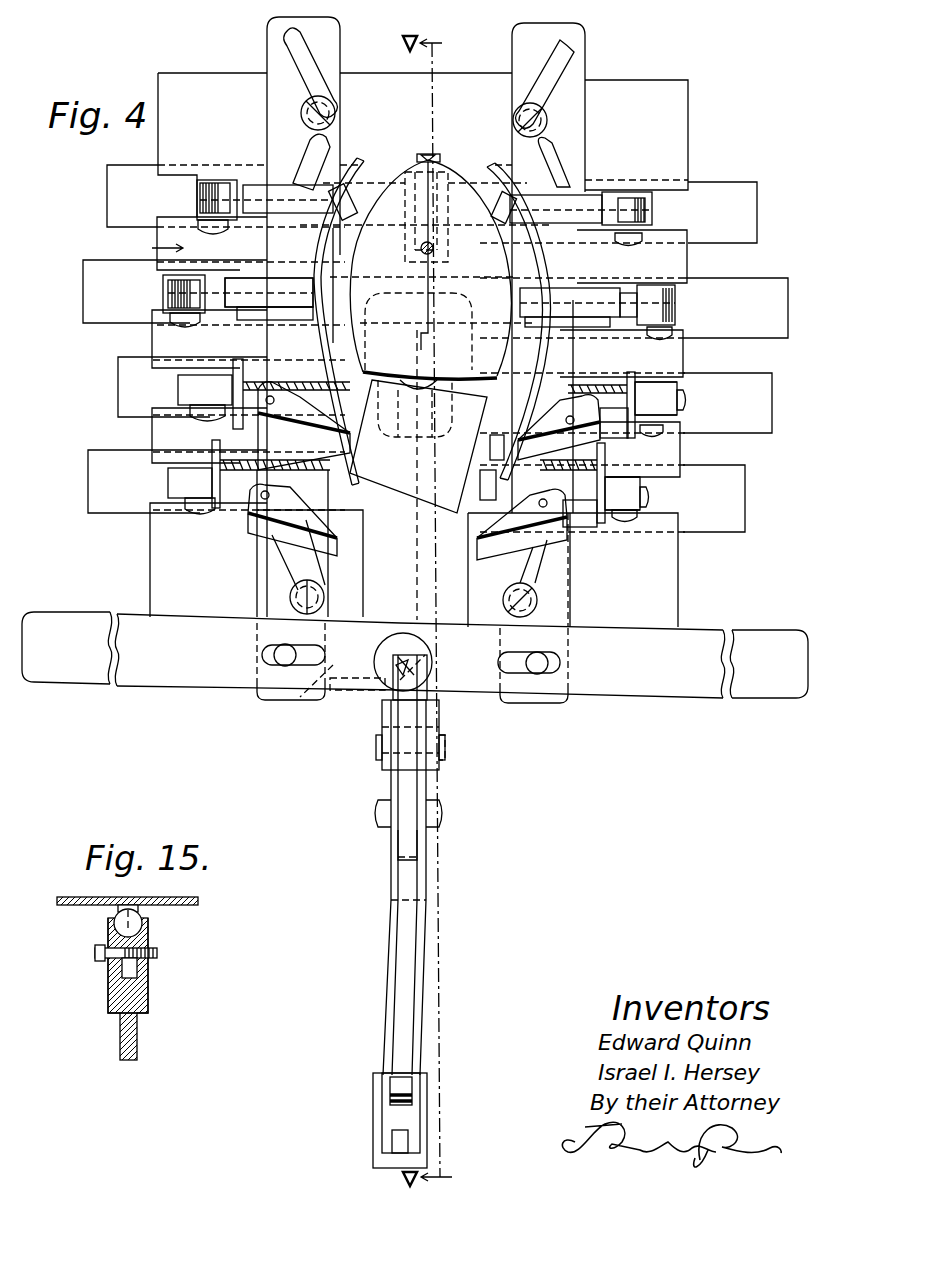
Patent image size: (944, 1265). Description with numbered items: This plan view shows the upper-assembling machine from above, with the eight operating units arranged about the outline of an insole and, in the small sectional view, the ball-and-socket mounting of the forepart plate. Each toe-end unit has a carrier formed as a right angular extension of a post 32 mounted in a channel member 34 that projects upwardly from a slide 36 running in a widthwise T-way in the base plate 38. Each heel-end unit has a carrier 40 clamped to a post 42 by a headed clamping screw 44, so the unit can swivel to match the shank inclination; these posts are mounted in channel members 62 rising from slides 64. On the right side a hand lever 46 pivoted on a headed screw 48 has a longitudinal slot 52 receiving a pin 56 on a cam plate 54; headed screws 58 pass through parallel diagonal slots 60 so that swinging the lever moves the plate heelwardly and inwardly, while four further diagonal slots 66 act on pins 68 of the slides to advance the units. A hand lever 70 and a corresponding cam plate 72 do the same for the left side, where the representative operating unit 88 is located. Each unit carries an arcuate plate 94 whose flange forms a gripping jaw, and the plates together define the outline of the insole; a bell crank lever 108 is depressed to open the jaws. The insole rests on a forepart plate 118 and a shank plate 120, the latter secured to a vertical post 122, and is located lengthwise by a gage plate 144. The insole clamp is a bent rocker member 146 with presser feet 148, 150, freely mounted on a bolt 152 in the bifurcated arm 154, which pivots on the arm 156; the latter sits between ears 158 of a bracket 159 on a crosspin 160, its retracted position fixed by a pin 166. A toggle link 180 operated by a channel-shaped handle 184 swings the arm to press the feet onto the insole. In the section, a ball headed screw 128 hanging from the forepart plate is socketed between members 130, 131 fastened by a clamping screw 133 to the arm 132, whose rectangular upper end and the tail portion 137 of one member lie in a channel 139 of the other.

In FIG. 4, the post 32 is at (630, 197).
In FIG. 4, the channel member 34 is at (657, 212).
In FIG. 4, the slide 36 is at (736, 260).
In FIG. 4, the base plate 38 is at (690, 155).
In FIG. 4, the carrier 40 is at (613, 410).
In FIG. 4, the post 42 is at (648, 397).
In FIG. 4, the headed clamping screw 44 is at (685, 393).
In FIG. 4, the hand lever 46 is at (628, 688).
In FIG. 4, the headed screw 48 is at (400, 643).
In FIG. 4, the longitudinal slot 52 is at (538, 698).
In FIG. 4, the cam plate 54 is at (562, 603).
In FIG. 4, the pin 56 is at (543, 663).
In FIG. 4, the headed screw 58 is at (502, 607).
In FIG. 4, the diagonal slots 60 is at (572, 67).
In FIG. 4, the channel member 62 is at (678, 387).
In FIG. 4, the slide 64 is at (727, 452).
In FIG. 4, the diagonal slots 66 is at (547, 147).
In FIG. 4, the pins 68 is at (560, 173).
In FIG. 4, the hand lever 70 is at (173, 672).
In FIG. 4, the cam plate 72 is at (263, 577).
In FIG. 4, the operating unit 88 is at (154, 249).
In FIG. 4, the arcuate plate 94 is at (333, 270).
In FIG. 4, the bell crank lever 108 is at (233, 290).
In FIG. 4, the forepart plate 118 is at (425, 390).
In FIG. 15, the forepart plate 118 is at (190, 897).
In FIG. 4, the shank plate 120 is at (395, 478).
In FIG. 4, the post 122 is at (388, 387).
In FIG. 4, the gage plate 144 is at (432, 153).
In FIG. 4, the rocker member 146 is at (407, 777).
In FIG. 4, the presser foot 148 is at (400, 685).
In FIG. 4, the presser foot 150 is at (392, 893).
In FIG. 4, the bolt 152 is at (378, 807).
In FIG. 4, the arm 154 is at (402, 932).
In FIG. 4, the arm 156 is at (385, 973).
In FIG. 4, the ears 158 is at (383, 725).
In FIG. 4, the bracket 159 is at (302, 696).
In FIG. 4, the crosspin 160 is at (377, 747).
In FIG. 4, the pin 166 is at (443, 740).
In FIG. 4, the toggle link 180 is at (388, 1110).
In FIG. 4, the handle 184 is at (373, 1115).
In FIG. 15, the ball headed screw 128 is at (108, 921).
In FIG. 15, the member 130 is at (152, 930).
In FIG. 15, the member 131 is at (108, 993).
In FIG. 15, the arm 132 is at (120, 1042).
In FIG. 15, the clamping screw 133 is at (98, 948).
In FIG. 15, the tail portion 137 is at (148, 1003).
In FIG. 15, the channel 139 is at (140, 963).